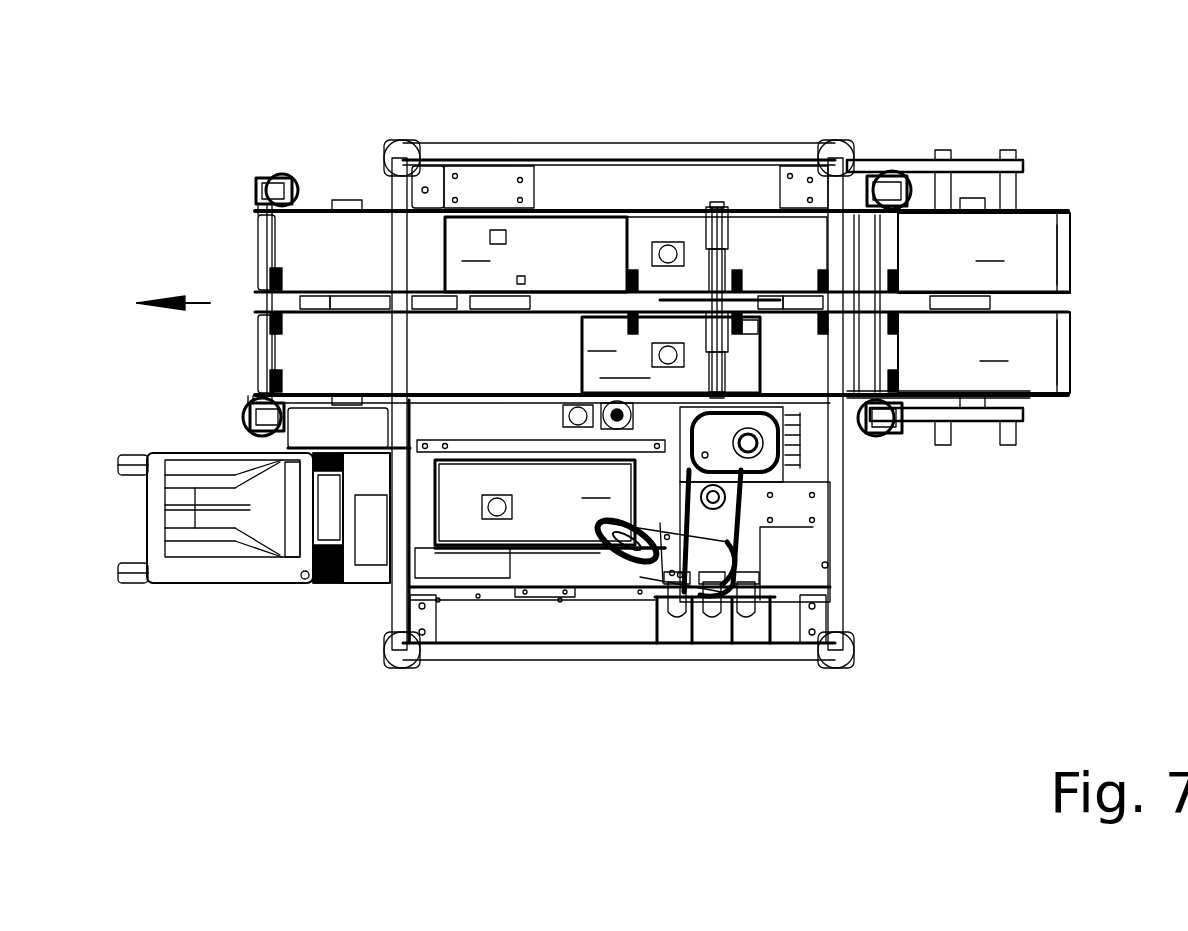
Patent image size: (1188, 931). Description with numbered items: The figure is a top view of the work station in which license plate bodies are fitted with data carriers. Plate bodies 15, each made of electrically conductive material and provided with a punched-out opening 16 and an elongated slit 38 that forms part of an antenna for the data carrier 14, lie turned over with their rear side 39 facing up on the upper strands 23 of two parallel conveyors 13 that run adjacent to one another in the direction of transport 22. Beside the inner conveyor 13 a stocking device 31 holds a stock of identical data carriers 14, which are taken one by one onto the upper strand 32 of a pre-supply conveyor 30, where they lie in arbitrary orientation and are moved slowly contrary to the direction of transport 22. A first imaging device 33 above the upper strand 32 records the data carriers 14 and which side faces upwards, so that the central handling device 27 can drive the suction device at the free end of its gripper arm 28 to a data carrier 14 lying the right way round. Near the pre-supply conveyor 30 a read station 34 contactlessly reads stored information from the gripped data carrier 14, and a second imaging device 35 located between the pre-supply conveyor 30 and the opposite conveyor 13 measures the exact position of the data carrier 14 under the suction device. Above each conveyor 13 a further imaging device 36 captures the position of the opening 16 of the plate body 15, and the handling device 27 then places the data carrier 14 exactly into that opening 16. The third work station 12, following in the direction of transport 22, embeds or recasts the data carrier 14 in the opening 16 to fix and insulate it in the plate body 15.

The third work station 12 is at (1080, 141).
The conveyor 13 is at (1031, 258).
The data carrier 14 is at (545, 278).
The plate body 15 is at (636, 305).
The opening 16 is at (696, 295).
The direction of transport 22 is at (192, 300).
The upper strand 23 is at (984, 303).
The handling device 27 is at (800, 458).
The gripper arm 28 is at (634, 548).
The pre-supply conveyor 30 is at (563, 525).
The stocking device 31 is at (273, 535).
The upper strand 32 is at (535, 502).
The first imaging device 33 is at (497, 512).
The read station 34 is at (620, 420).
The second imaging device 35 is at (575, 408).
The imaging device 36 is at (668, 246).
The slit 38 is at (521, 278).
The rear side 39 is at (503, 243).